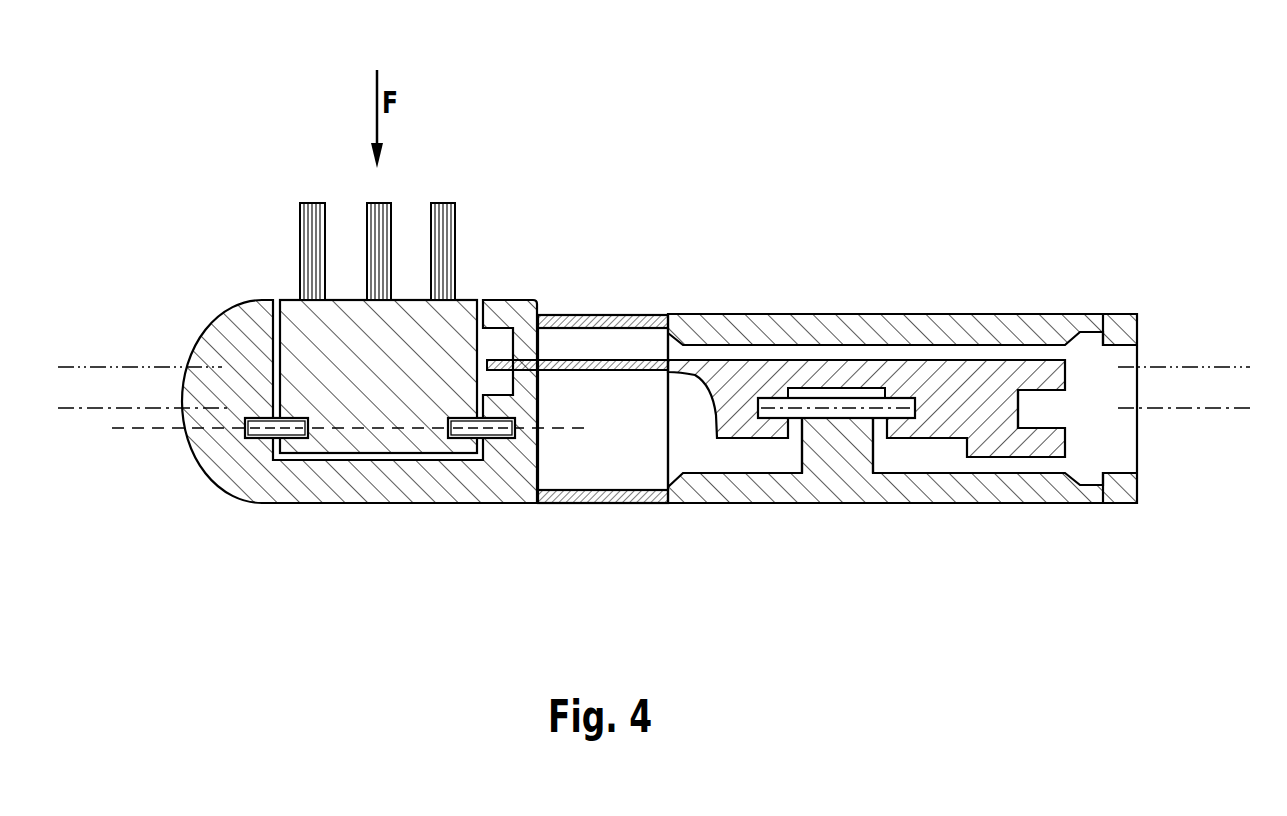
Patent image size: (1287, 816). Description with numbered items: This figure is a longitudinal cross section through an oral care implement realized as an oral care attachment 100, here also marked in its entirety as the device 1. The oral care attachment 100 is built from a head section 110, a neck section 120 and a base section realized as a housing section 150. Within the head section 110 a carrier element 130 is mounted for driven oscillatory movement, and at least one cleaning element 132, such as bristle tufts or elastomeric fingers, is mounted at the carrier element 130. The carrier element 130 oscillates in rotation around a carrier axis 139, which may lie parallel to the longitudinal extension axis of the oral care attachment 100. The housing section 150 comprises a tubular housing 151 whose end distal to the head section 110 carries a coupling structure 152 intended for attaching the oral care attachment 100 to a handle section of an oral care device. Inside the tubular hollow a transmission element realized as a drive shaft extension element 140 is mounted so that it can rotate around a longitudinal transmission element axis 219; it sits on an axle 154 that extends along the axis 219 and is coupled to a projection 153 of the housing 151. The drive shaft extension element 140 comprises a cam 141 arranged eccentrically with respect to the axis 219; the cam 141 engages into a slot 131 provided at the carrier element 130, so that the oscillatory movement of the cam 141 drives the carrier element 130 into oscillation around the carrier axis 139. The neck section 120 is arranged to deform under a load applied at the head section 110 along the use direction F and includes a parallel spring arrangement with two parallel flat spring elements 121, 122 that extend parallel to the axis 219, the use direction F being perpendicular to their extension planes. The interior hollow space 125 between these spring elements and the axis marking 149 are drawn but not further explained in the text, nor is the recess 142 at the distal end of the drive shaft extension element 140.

The sensor device 1 is at (960, 615).
The oral care attachment 100 is at (580, 142).
The head section 110 is at (360, 540).
The neck section 120 is at (623, 397).
The spring element 121 is at (598, 505).
The spring element 122 is at (615, 317).
The cavity 125 is at (636, 455).
The carrier element 130 is at (288, 297).
The slot 131 is at (497, 350).
The cleaning element 132 is at (363, 248).
The carrier axis 139 is at (147, 432).
The drive shaft extension element 140 is at (937, 356).
The cam 141 is at (568, 360).
The recess 142 is at (1058, 408).
The first axis 149 is at (80, 367).
The housing section 150 is at (919, 394).
The tubular housing 151 is at (990, 330).
The coupling structure 152 is at (1098, 313).
The projection 153 is at (838, 438).
The axle 154 is at (898, 420).
The longitudinal transmission element axis 219 is at (77, 410).